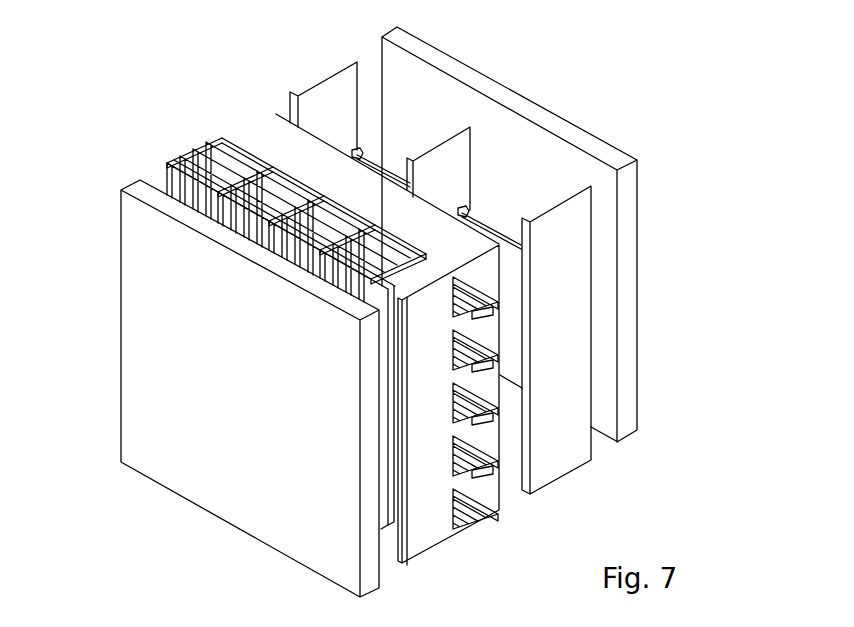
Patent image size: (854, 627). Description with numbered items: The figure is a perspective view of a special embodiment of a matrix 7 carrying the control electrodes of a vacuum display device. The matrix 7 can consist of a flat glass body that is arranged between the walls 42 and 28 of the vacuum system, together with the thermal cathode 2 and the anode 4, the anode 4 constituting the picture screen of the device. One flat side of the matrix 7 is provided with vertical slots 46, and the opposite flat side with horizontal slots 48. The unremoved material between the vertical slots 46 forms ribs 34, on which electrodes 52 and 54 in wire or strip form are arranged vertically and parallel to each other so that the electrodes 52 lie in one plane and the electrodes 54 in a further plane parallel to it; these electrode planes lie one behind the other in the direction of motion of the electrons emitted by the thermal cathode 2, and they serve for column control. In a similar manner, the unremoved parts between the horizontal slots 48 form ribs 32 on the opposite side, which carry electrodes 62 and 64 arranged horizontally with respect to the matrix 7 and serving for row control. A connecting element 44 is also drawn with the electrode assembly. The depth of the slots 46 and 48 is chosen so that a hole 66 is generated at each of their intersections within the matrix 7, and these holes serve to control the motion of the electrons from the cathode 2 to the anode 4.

The thermal cathode 2 is at (502, 326).
The anode 4 is at (386, 448).
The matrix 7 is at (445, 540).
The wall 28 is at (602, 147).
The ribs 32 is at (492, 404).
The ribs 34 is at (259, 202).
The wall 42 is at (245, 522).
The connecting rod 44 is at (485, 221).
The vertical slots 46 is at (272, 197).
The horizontal slots 48 is at (490, 492).
The electrodes 52 is at (210, 212).
The electrodes 54 is at (378, 288).
The electrodes 62 is at (458, 413).
The electrodes 64 is at (477, 453).
The hole 66 is at (392, 550).